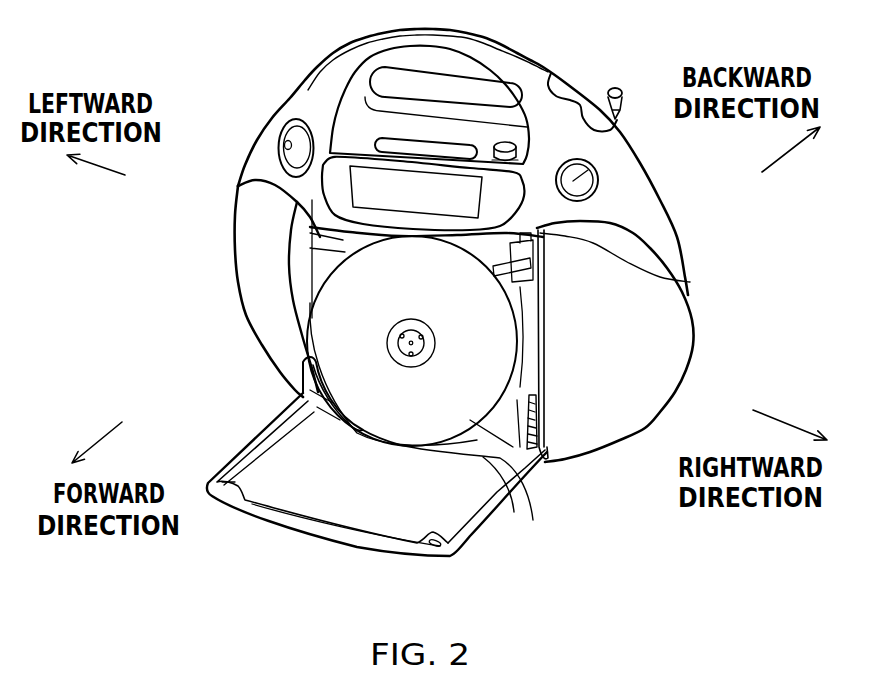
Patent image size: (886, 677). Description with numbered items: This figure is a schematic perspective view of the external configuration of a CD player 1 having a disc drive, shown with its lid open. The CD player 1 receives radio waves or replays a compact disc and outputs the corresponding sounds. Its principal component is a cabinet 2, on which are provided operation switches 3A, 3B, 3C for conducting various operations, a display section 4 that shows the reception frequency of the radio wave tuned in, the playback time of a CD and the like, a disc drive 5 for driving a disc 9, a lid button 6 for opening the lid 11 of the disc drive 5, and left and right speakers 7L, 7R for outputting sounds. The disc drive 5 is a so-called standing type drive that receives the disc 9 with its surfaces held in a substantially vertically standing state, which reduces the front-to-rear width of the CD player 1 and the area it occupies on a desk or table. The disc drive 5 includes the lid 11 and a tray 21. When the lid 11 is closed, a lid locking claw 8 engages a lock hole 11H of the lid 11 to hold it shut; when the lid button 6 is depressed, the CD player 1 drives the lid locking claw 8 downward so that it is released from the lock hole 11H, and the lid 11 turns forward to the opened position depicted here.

The CD player 1 is at (826, 53).
The cabinet 2 is at (663, 223).
The operation switch 3A is at (288, 145).
The operation switch 3B is at (598, 167).
The operation switch 3C is at (570, 84).
The display section 4 is at (335, 173).
The disc drive 5 is at (253, 396).
The lid button 6 is at (506, 143).
The left speaker 7L is at (250, 232).
The right speaker 7R is at (670, 318).
The lid locking claw 8 is at (683, 280).
The disc 9 is at (517, 460).
The lid 11 is at (373, 496).
The lock hole 11H is at (433, 547).
The tray 21 is at (510, 505).